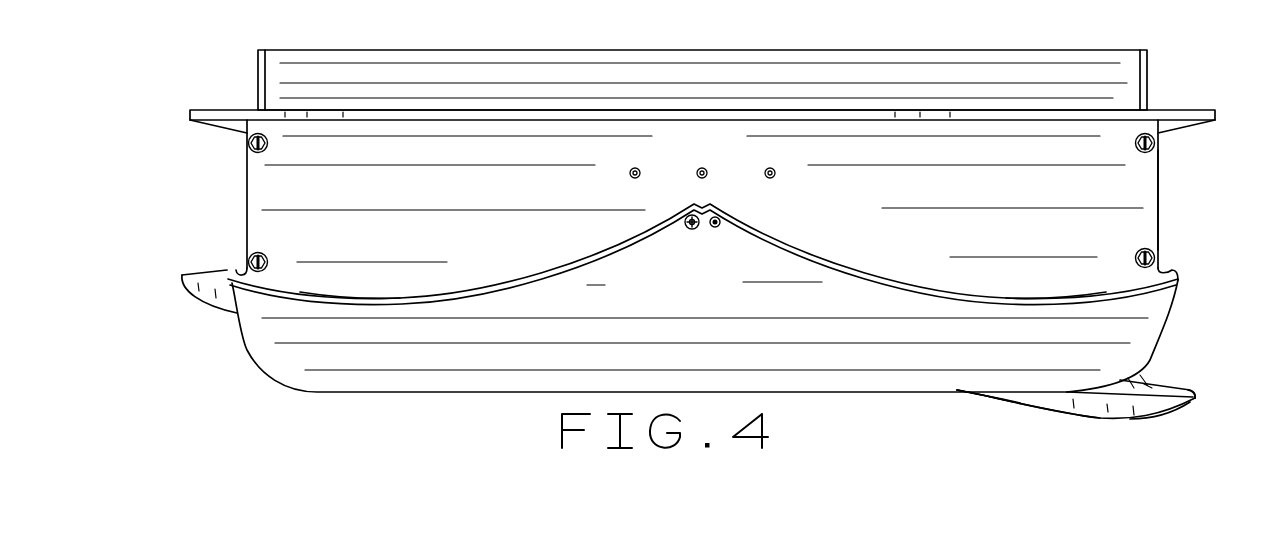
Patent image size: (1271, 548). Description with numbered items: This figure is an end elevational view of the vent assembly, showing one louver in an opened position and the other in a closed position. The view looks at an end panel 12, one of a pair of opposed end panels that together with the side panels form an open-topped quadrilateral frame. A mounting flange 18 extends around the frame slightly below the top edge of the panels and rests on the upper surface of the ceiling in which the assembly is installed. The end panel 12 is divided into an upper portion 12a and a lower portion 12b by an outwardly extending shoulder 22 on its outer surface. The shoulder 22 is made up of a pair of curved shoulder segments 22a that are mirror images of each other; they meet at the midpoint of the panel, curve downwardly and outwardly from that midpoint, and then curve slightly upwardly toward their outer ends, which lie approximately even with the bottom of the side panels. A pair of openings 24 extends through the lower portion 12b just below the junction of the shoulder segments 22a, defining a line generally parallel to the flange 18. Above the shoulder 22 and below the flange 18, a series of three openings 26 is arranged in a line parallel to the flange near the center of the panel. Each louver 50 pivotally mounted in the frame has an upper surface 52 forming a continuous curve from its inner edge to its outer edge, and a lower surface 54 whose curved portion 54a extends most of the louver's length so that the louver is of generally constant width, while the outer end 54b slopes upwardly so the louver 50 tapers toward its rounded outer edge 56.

The end panel 12 is at (742, 48).
The upper portion of end panel 12a is at (1160, 193).
The lower portion of end panel 12b is at (1163, 323).
The flange 18 is at (220, 110).
The shoulder 22 is at (792, 224).
The shoulder segments 22a is at (494, 282).
The openings 24 is at (715, 228).
The openings 26 is at (633, 160).
The louver 50 is at (212, 303).
The upper surface of louver 52 is at (1147, 382).
The lower surface of louver 54 is at (1028, 407).
The curved portion of bottom surface 54a is at (990, 402).
The outer end of bottom surface 54b is at (1170, 412).
The outer edge of louver 56 is at (1196, 395).